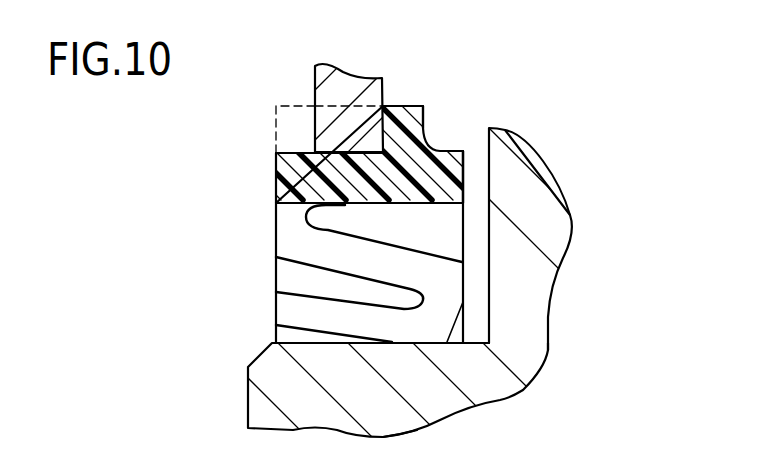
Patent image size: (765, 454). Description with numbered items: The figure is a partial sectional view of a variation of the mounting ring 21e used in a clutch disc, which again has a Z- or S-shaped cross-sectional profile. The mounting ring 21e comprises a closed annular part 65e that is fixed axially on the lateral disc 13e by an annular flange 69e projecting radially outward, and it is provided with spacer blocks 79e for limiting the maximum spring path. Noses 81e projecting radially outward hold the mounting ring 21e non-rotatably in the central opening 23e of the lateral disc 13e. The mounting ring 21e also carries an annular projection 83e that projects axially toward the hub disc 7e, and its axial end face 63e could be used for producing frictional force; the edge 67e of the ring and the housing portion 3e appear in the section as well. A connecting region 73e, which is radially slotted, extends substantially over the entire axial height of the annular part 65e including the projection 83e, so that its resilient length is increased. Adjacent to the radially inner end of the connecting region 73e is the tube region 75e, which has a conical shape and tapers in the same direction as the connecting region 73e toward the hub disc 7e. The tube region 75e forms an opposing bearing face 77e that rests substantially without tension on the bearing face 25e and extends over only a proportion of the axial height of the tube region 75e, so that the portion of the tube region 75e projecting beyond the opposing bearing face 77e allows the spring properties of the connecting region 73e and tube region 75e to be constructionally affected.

The housing base 3e is at (292, 388).
The hub disc 7e is at (540, 217).
The lateral disc 13e is at (350, 105).
The mounting ring 21e is at (250, 255).
The central opening 23e is at (370, 160).
The bearing face 25e is at (472, 333).
The axial end face 63e is at (465, 178).
The closed annular part 65e is at (310, 172).
The edge of sealing ring 67e is at (308, 153).
The annular flange 69e is at (426, 107).
The connecting region 73e is at (323, 243).
The tube region 75e is at (323, 310).
The opposing bearing face 77e is at (437, 414).
The spacer blocks 79e is at (275, 106).
The noses 81e is at (336, 107).
The annular projection 83e is at (464, 160).